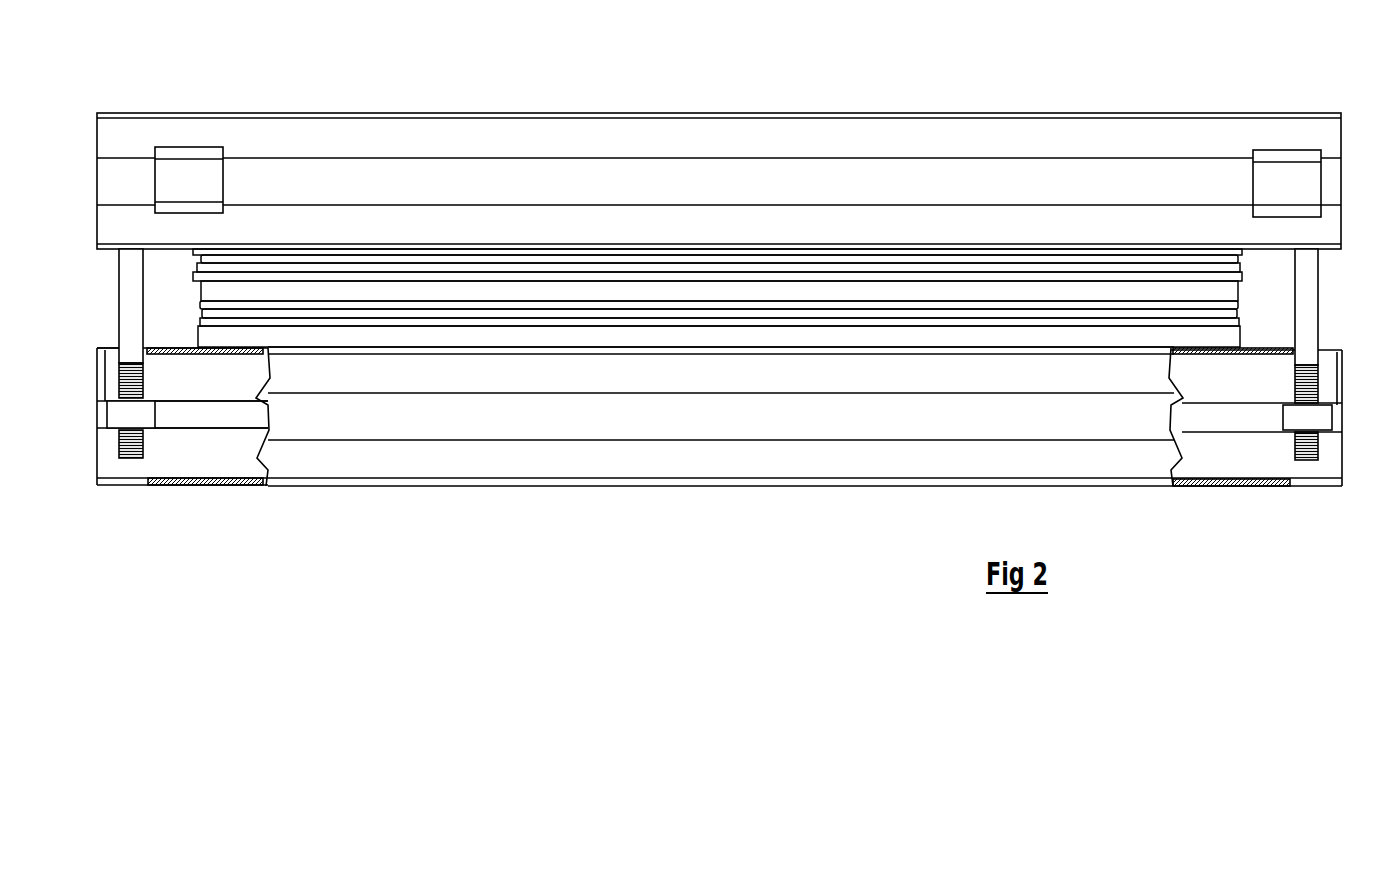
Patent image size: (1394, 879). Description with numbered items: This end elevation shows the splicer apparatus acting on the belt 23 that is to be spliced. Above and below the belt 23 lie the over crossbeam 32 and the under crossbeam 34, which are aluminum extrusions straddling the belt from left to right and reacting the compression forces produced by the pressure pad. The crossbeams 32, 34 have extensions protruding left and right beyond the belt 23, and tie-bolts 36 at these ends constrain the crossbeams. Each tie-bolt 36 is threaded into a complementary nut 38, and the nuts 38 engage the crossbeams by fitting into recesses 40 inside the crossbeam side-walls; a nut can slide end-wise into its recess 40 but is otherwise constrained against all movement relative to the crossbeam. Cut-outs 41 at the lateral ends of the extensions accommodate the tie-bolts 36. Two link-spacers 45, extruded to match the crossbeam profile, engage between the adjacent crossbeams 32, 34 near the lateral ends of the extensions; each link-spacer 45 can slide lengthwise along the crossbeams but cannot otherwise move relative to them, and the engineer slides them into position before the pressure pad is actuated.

The belt 23 is at (923, 317).
The over crossbeam 32 is at (637, 140).
The under crossbeam 34 is at (693, 460).
The tie-bolt 36 is at (1310, 307).
The nut 38 is at (1317, 418).
The recess 40 is at (217, 420).
The cut-out 41 is at (103, 347).
The link-spacer 45 is at (182, 175).